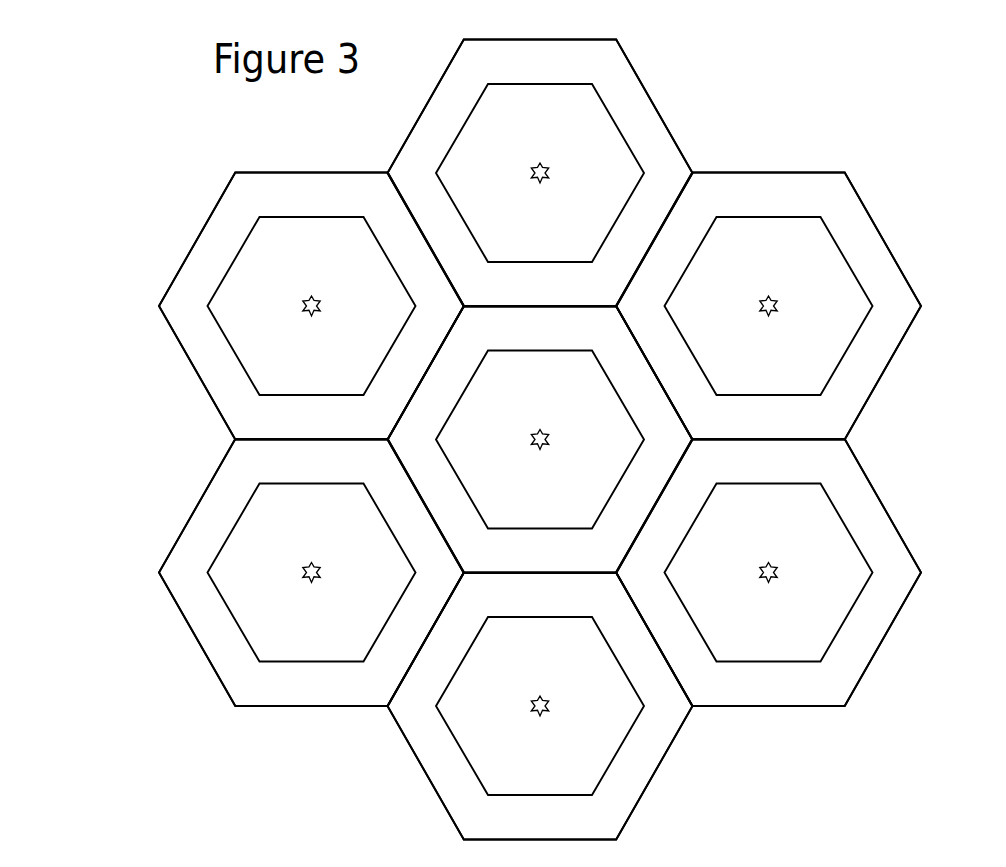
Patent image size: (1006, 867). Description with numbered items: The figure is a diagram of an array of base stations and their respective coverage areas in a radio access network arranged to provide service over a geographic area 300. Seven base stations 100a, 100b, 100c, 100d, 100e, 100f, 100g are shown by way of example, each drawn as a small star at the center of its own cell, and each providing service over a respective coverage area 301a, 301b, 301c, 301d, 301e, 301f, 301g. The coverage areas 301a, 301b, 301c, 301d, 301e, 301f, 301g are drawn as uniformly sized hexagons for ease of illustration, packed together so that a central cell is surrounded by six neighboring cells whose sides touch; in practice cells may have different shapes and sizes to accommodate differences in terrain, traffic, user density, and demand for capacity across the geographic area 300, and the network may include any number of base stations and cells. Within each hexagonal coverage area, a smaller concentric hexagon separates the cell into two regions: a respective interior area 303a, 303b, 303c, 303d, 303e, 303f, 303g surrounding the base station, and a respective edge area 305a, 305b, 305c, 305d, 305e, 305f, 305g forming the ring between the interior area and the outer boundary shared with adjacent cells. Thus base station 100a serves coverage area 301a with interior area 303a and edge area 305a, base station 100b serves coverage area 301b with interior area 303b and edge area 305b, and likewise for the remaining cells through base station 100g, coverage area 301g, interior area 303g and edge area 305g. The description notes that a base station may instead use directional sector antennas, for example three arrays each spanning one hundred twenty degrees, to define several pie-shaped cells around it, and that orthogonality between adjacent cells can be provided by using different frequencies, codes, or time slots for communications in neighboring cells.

The geographic area 300 is at (752, 141).
The base station 100a is at (557, 424).
The base station 100b is at (557, 157).
The base station 100c is at (329, 290).
The base station 100d is at (329, 557).
The base station 100e is at (557, 690).
The base station 100f is at (785, 557).
The base station 100g is at (786, 290).
The coverage area 301a is at (508, 347).
The coverage area 301b is at (558, 172).
The coverage area 301c is at (283, 295).
The coverage area 301d is at (259, 572).
The coverage area 301e is at (517, 708).
The coverage area 301f is at (773, 590).
The coverage area 301g is at (806, 306).
The interior area 303a is at (540, 440).
The interior area 303b is at (540, 173).
The interior area 303c is at (312, 306).
The interior area 303d is at (312, 573).
The interior area 303e is at (540, 706).
The interior area 303f is at (769, 573).
The interior area 303g is at (769, 306).
The edge area 305a is at (540, 439).
The edge area 305b is at (540, 173).
The edge area 305c is at (311, 306).
The edge area 305d is at (311, 572).
The edge area 305e is at (540, 706).
The edge area 305f is at (768, 572).
The edge area 305g is at (768, 306).